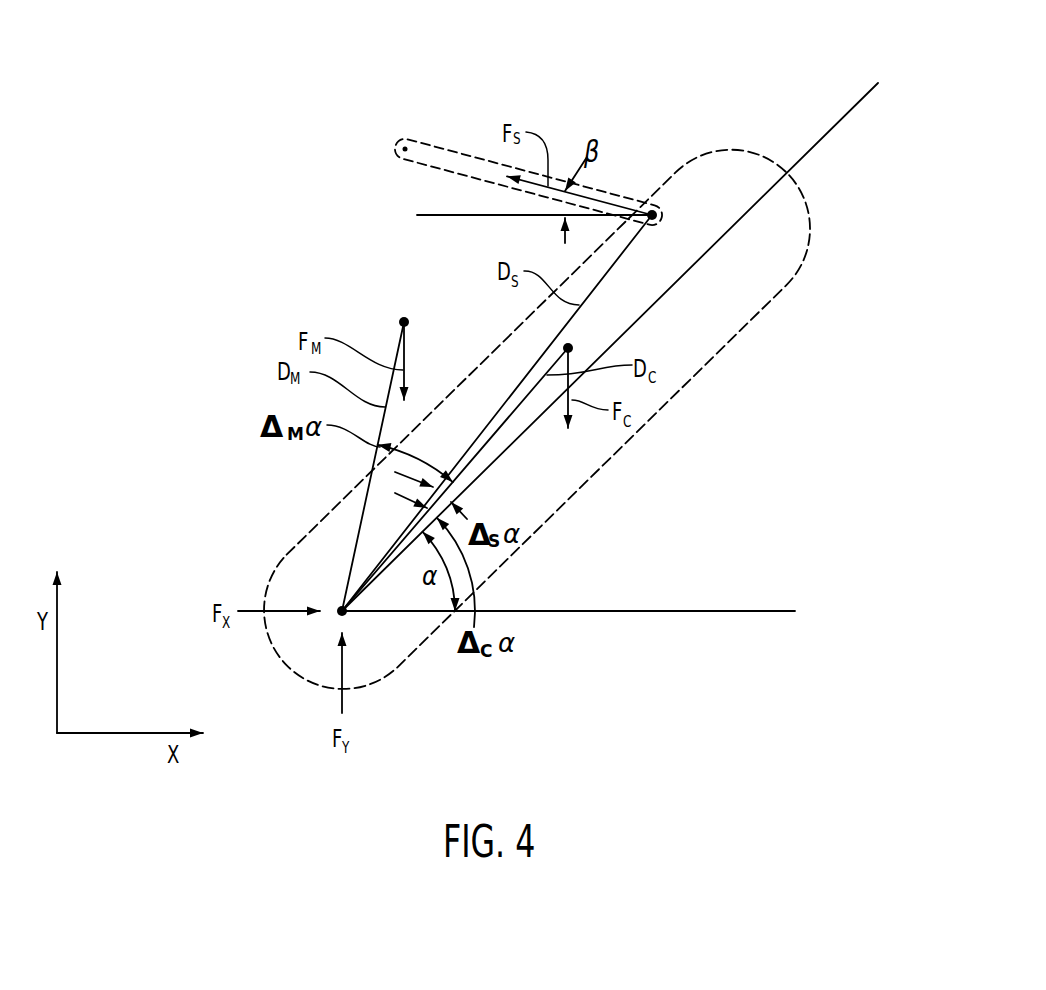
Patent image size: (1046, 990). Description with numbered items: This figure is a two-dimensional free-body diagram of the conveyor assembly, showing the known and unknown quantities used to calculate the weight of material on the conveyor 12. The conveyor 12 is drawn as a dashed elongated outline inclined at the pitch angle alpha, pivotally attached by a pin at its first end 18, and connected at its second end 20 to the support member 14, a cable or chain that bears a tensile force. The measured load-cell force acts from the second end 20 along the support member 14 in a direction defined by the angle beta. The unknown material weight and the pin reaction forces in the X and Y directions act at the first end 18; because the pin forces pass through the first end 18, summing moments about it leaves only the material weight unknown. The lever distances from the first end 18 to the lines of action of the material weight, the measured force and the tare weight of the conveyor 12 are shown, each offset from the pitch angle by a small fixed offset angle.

The conveyor 12 is at (806, 206).
The support member 14 is at (404, 140).
The first end 18 is at (348, 615).
The second end 20 is at (649, 200).